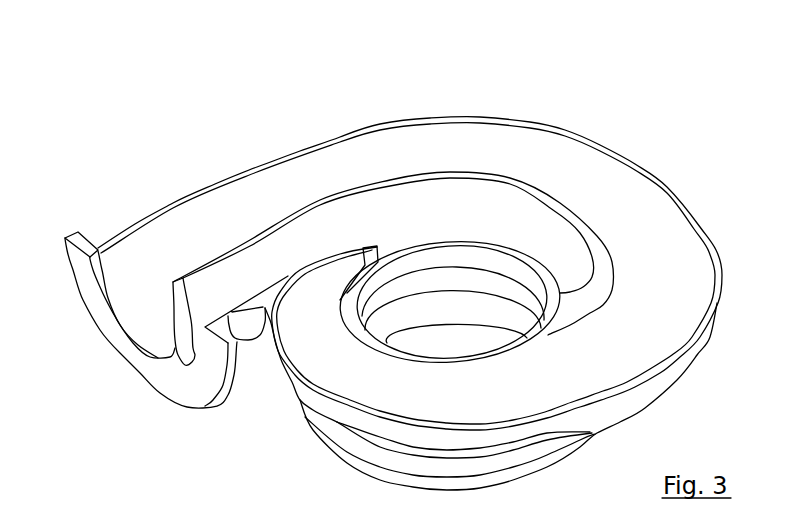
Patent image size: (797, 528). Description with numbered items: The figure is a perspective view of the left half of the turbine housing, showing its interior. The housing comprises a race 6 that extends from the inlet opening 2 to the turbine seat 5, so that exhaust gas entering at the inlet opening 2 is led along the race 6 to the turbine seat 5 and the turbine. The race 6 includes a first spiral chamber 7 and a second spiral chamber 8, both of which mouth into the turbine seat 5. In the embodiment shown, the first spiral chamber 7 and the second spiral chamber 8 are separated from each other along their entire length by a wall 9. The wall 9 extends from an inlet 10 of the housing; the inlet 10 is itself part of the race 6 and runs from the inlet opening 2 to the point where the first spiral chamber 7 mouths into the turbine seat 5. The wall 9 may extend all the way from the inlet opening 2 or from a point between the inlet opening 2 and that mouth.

The inlet opening 2 is at (147, 313).
The turbine seat 5 is at (468, 340).
The race 6 is at (497, 132).
The first spiral chamber 7 is at (407, 207).
The second spiral chamber 8 is at (570, 167).
The wall 9 is at (567, 210).
The inlet 10 is at (175, 232).